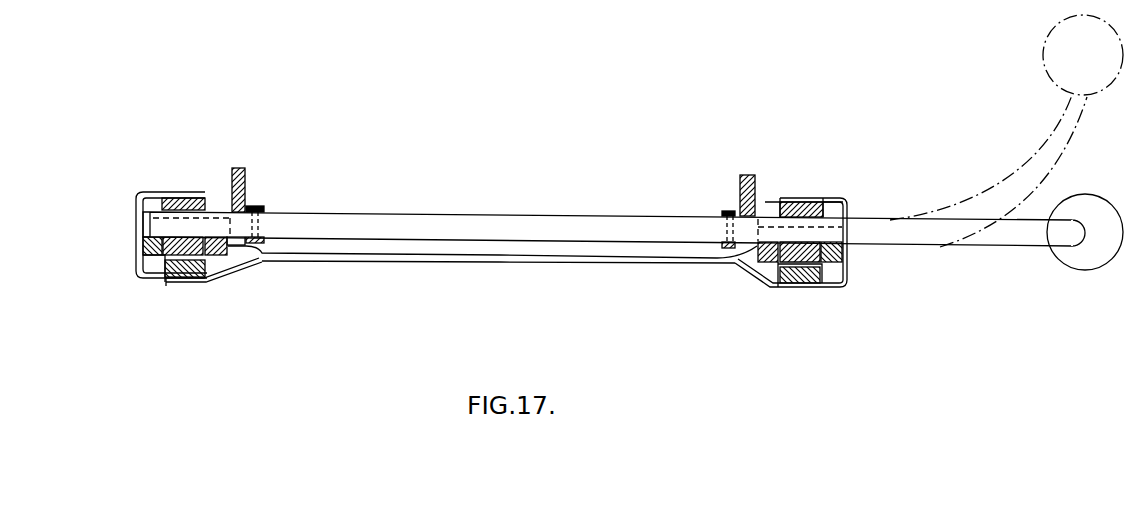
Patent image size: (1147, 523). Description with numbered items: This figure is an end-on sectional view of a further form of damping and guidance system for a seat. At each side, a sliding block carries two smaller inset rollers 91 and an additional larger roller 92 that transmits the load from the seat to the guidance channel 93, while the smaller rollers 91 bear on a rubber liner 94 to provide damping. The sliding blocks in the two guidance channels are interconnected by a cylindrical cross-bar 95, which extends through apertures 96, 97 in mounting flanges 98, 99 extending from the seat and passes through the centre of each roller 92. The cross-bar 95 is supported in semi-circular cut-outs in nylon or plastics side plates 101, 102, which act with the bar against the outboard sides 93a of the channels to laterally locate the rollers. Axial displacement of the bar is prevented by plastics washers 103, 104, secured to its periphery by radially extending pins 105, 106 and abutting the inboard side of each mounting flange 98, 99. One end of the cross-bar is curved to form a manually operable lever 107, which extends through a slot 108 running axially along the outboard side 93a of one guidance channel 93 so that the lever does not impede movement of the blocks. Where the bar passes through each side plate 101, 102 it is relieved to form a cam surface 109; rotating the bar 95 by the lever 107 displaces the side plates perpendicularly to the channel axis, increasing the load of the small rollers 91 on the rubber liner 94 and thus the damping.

The inset rollers 91 is at (210, 266).
The larger rollers 92 is at (192, 198).
The guidance channel 93 is at (137, 275).
The outboard side 93a is at (142, 253).
The rubber liner 94 is at (168, 280).
The cylindrical cross-bar 95 is at (582, 240).
The aperture 96 is at (745, 268).
The aperture 97 is at (238, 235).
The mounting flange 98 is at (746, 178).
The mounting flange 99 is at (238, 166).
The side plate 101 is at (153, 258).
The side plate 102 is at (226, 245).
The plastics washer 103 is at (722, 254).
The plastics washer 104 is at (262, 205).
The radially extending pin 105 is at (728, 210).
The radially extending pin 106 is at (293, 258).
The manually operable lever 107 is at (1005, 243).
The slot 108 is at (847, 215).
The cam surface 109 is at (160, 192).